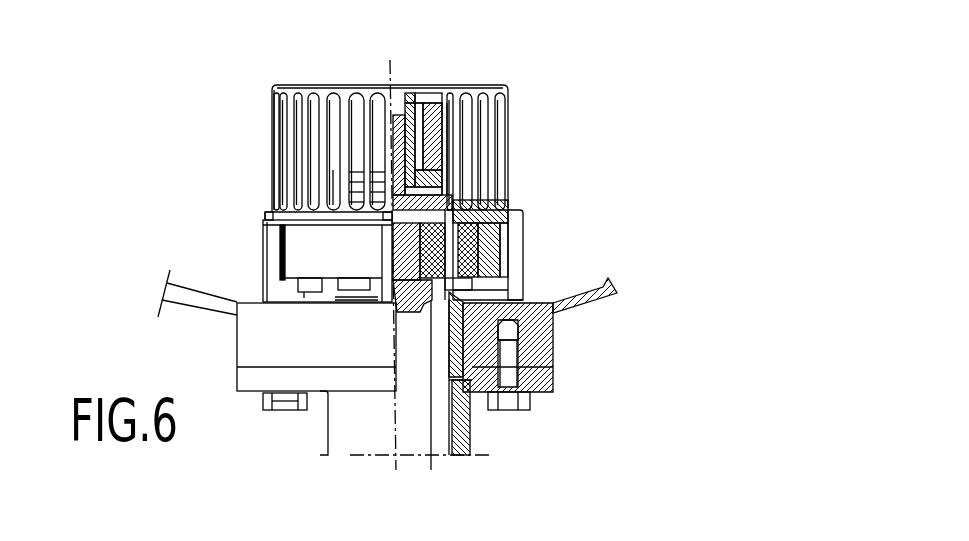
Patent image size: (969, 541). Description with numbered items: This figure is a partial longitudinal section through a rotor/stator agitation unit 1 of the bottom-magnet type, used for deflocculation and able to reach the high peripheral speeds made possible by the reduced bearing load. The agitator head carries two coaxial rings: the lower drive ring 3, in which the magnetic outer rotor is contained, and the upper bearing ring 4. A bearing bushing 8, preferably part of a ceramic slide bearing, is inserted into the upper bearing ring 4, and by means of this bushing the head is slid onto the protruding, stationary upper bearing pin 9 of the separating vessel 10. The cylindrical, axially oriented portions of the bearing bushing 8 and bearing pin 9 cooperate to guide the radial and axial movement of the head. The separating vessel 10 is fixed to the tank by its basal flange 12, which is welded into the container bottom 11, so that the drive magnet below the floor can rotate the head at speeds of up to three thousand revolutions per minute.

The thermostatic head assembly 1 is at (237, 200).
The lower drive ring 3 is at (322, 252).
The upper bearing ring 4 is at (440, 106).
The bearing bushing 8 is at (420, 104).
The upper bearing pin 9 is at (410, 104).
The separating vessel 10 is at (440, 195).
The container bottom 11 is at (598, 283).
The basal flange 12 is at (553, 347).